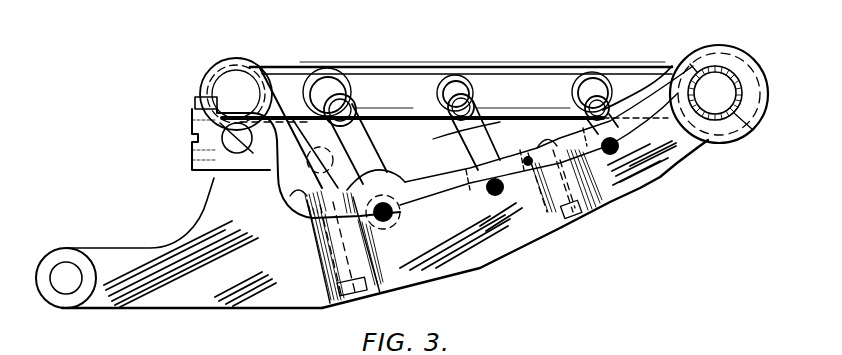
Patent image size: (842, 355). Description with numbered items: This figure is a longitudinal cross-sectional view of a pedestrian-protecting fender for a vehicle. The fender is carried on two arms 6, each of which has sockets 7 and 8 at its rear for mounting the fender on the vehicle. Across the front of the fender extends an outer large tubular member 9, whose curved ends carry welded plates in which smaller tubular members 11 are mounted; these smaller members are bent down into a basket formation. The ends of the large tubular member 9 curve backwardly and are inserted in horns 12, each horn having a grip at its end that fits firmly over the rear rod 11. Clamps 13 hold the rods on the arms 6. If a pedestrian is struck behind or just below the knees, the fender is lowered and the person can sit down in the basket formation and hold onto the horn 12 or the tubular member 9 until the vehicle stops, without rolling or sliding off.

The arm 6 is at (187, 298).
The socket 7 is at (70, 268).
The socket 8 is at (215, 177).
The outer large tubular member 9 is at (558, 66).
The smaller tubular member 11 is at (372, 137).
The horn 12 is at (322, 143).
The clamp 13 is at (443, 183).